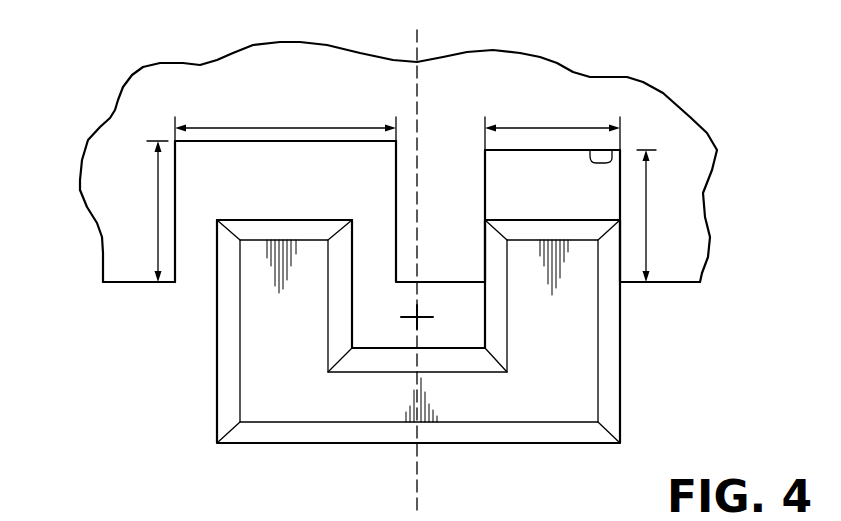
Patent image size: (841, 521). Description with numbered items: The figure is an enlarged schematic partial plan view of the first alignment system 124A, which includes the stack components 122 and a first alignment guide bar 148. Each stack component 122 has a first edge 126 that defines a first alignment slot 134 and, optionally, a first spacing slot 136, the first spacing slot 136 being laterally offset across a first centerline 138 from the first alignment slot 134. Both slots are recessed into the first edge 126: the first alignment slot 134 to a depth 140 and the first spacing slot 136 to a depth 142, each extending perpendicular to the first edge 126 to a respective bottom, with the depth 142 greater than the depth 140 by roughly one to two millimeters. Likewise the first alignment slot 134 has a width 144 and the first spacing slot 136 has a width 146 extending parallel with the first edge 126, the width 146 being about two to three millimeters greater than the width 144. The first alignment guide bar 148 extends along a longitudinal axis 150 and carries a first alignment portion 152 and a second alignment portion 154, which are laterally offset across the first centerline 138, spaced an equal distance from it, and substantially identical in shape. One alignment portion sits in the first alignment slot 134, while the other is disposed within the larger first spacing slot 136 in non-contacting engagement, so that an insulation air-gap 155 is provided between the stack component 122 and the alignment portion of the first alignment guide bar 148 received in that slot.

The stack component 122 is at (112, 143).
The first alignment system 124A is at (643, 302).
The first edge 126 is at (133, 282).
The first alignment slot 134 is at (612, 150).
The first spacing slot 136 is at (192, 141).
The first centerline 138 is at (420, 45).
The depth of first alignment slot 140 is at (646, 230).
The depth of first spacing slot 142 is at (158, 212).
The width of first alignment slot 144 is at (557, 128).
The width of first spacing slot 146 is at (278, 128).
The first alignment guide bar 148 is at (516, 443).
The longitudinal axis 150 is at (417, 310).
The first alignment portion 152 is at (247, 220).
The second alignment portion 154 is at (505, 220).
The insulation air-gap 155 is at (372, 182).